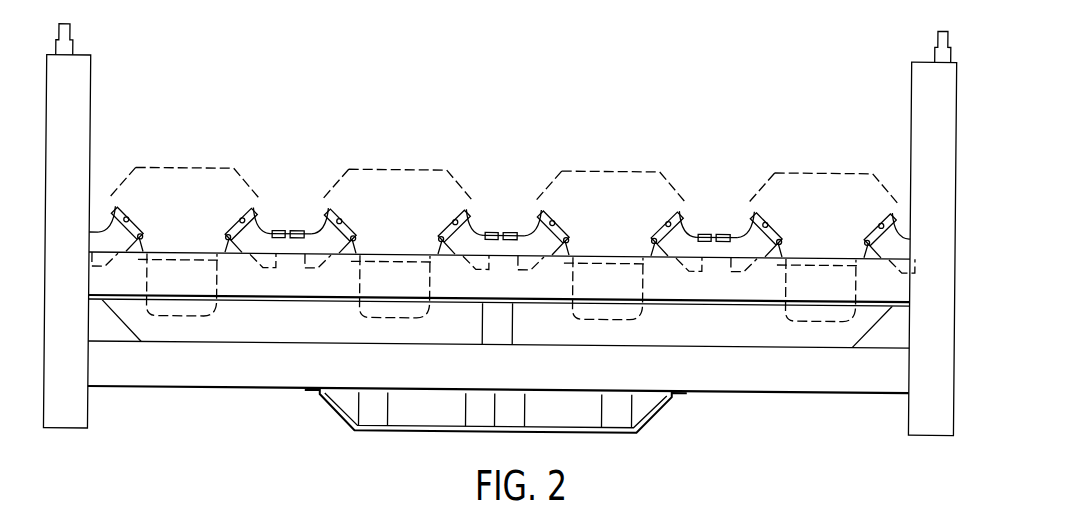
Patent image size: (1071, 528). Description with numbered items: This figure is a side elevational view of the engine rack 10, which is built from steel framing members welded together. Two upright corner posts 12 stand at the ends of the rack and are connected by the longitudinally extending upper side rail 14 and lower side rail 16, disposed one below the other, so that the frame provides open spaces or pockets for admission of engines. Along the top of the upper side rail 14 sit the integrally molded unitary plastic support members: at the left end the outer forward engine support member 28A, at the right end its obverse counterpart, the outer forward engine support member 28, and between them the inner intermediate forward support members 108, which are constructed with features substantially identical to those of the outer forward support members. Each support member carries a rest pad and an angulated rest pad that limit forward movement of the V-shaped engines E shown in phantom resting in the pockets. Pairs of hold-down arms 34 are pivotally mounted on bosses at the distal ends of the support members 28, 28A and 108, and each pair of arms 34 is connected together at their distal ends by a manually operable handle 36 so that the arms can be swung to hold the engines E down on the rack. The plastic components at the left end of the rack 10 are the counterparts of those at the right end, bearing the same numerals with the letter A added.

The engine rack 10 is at (772, 382).
The corner posts 12 is at (79, 72).
The upper side rail 14 is at (286, 274).
The lower side rail 16 is at (229, 367).
The outer forward engine support member 28 is at (896, 217).
The outer forward engine support member 28A is at (100, 230).
The hold-down arms 34 is at (501, 253).
The manually operable handle 36 is at (499, 216).
The inner intermediate forward support member 108 is at (317, 230).
The engine E is at (174, 166).